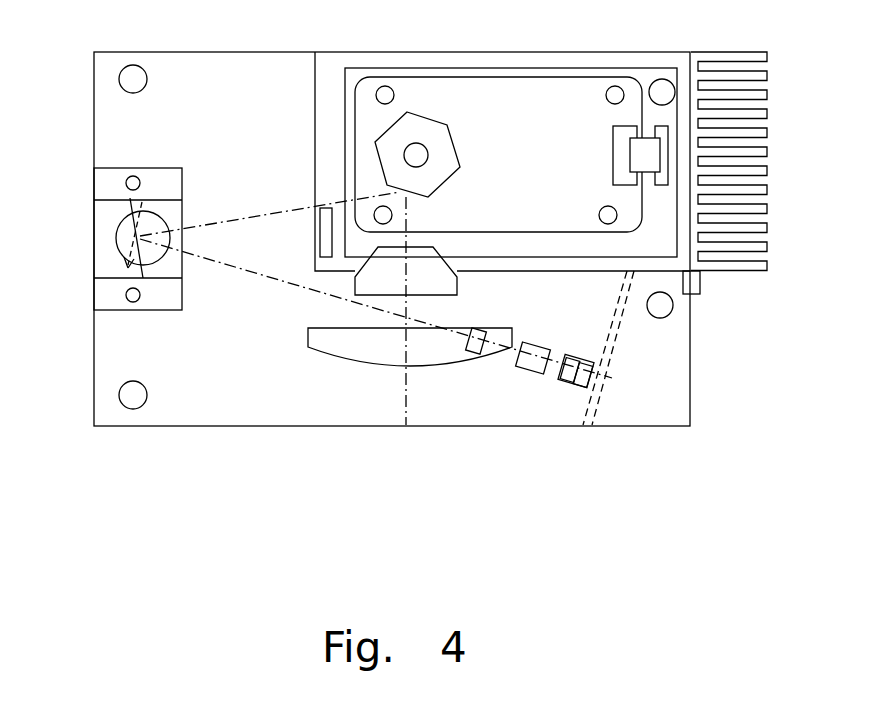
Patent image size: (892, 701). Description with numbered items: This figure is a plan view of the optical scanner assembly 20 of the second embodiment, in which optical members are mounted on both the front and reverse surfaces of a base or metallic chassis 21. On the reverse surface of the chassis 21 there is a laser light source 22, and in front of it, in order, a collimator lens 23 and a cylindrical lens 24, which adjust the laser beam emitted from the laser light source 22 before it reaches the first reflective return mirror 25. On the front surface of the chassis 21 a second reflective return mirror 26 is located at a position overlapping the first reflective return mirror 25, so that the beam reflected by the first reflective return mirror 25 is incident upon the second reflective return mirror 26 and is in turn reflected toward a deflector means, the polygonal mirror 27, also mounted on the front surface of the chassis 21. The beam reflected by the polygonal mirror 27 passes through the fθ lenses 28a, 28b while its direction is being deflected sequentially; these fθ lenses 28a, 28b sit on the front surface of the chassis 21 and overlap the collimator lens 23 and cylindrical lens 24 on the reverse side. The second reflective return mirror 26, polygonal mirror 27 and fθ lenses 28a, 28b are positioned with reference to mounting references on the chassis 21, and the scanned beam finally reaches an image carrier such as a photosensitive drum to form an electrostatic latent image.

The optical scanner assembly 20 is at (243, 437).
The metallic chassis 21 is at (653, 343).
The laser light source 22 is at (568, 385).
The collimator lens 23 is at (528, 372).
The cylindrical lens 24 is at (470, 357).
The first reflective return mirror 25 is at (128, 263).
The second reflective return mirror 26 is at (130, 205).
The polygonal mirror 27 is at (438, 137).
The fθ lens 28a is at (437, 252).
The fθ lens 28b is at (352, 350).